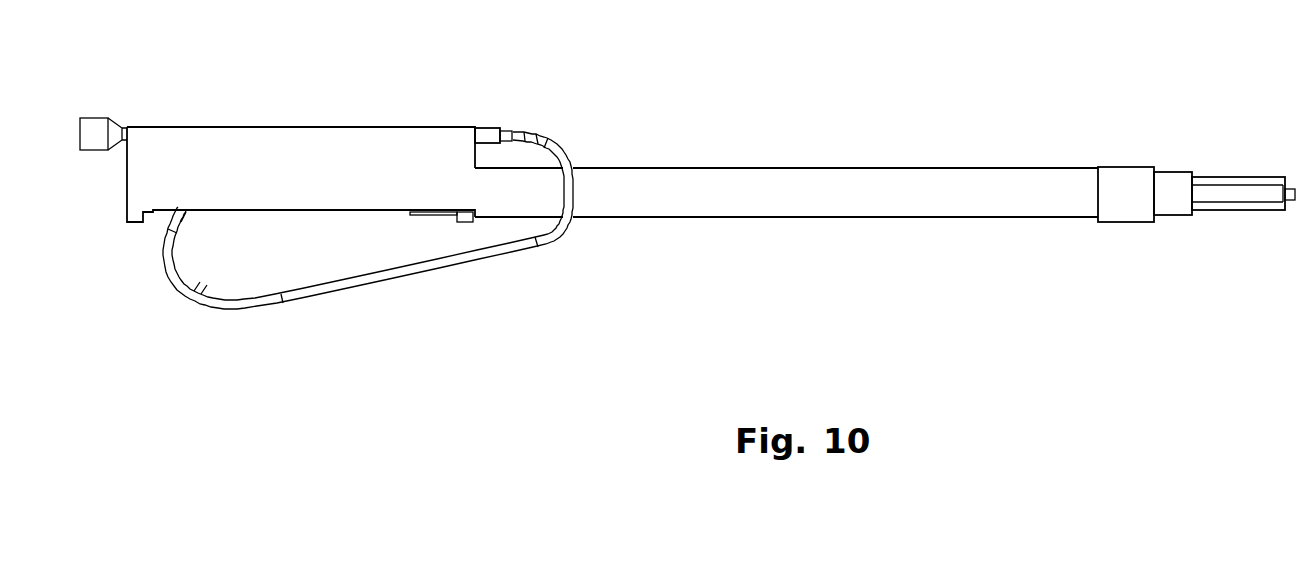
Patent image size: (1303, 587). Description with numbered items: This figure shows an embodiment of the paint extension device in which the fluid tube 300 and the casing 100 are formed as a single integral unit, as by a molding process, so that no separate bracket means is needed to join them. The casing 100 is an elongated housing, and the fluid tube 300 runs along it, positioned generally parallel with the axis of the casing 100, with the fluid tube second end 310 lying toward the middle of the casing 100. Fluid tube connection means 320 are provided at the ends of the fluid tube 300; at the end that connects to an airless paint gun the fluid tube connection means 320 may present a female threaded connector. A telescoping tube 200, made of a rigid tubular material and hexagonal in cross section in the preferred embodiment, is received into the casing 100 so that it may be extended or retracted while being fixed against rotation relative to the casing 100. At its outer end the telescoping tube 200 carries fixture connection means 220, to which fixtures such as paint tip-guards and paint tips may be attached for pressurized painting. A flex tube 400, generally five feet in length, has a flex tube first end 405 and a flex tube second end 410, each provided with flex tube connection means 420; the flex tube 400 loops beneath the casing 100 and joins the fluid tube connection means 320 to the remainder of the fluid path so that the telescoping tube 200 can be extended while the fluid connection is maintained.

The casing 100 is at (885, 218).
The telescoping tube 200 is at (1230, 178).
The fixture connection means 220 is at (1294, 201).
The fluid tube 300 is at (128, 127).
The fluid tube second end 310 is at (119, 123).
The fluid tube connection means 320 is at (483, 127).
The flex tube 400 is at (418, 273).
The flex tube first end 405 is at (541, 136).
The flex tube second end 410 is at (178, 222).
The flex tube connection means 420 is at (505, 128).